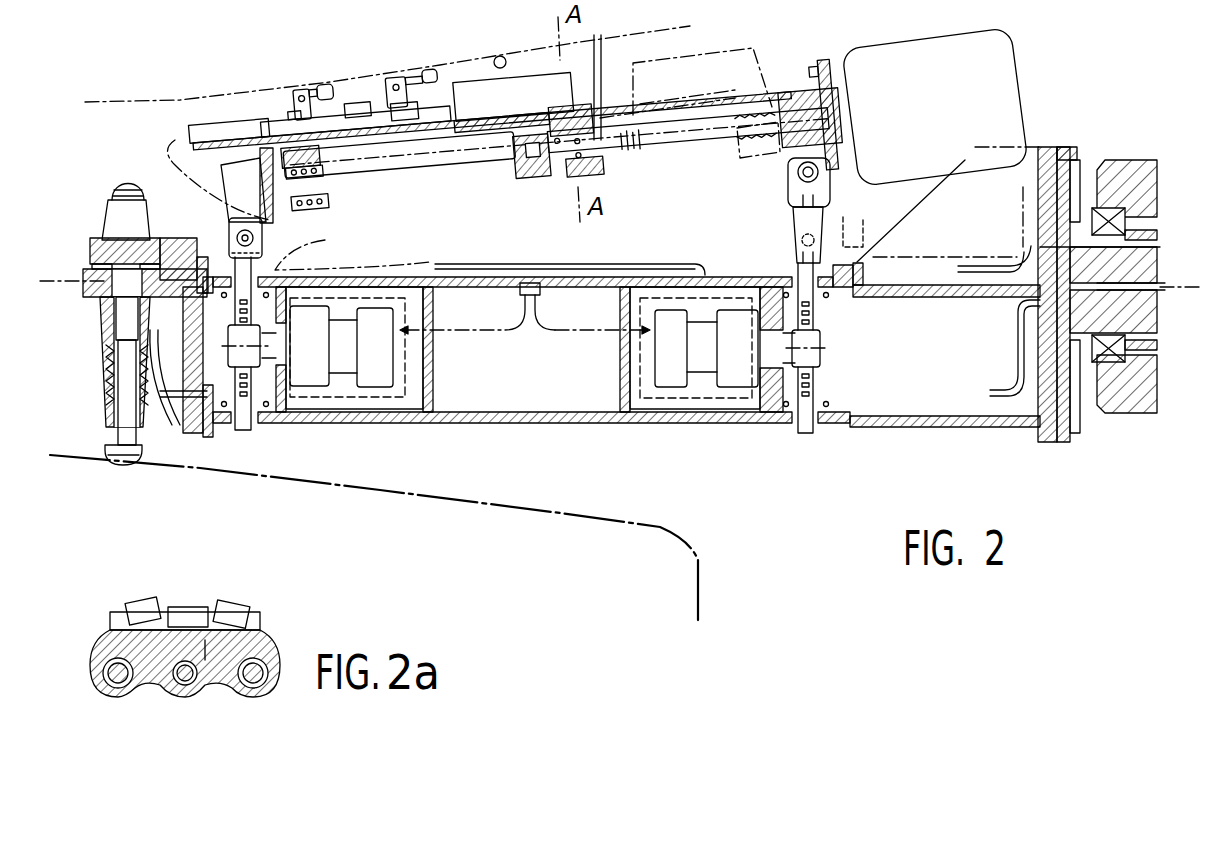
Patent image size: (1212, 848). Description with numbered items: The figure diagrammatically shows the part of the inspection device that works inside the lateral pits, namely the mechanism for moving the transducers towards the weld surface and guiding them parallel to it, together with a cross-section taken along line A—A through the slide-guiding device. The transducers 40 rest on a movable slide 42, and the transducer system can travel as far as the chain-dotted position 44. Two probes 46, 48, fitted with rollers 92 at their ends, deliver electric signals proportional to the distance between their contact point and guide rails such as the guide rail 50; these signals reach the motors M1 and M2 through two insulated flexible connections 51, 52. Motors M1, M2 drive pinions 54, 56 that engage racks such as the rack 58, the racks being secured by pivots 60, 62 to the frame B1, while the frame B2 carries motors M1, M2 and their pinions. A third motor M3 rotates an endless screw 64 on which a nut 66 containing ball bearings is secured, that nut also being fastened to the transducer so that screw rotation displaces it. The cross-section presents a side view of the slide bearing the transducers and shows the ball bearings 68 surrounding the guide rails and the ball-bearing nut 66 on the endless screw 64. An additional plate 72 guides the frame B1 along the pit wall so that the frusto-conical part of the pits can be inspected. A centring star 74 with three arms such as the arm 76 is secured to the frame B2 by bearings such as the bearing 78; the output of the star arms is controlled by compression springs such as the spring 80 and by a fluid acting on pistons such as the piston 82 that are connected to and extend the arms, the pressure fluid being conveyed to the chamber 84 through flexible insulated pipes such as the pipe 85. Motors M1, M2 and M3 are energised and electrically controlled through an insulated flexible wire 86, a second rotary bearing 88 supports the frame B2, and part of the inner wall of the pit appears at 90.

In FIG. 2, the transducers 40 is at (531, 139).
In FIG. 2A, the transducers 40 is at (150, 603).
In FIG. 2, the movable slide 42 is at (597, 60).
In FIG. 2A, the movable slide 42 is at (265, 650).
In FIG. 2, the chain-dotted position 44 is at (760, 55).
In FIG. 2, the probe 46 is at (307, 88).
In FIG. 2, the probe 48 is at (400, 82).
In FIG. 2, the guide rail 50 is at (395, 172).
In FIG. 2, the insulated flexible connection 51 is at (515, 268).
In FIG. 2, the insulated flexible connection 52 is at (445, 262).
In FIG. 2, the pinion 54 is at (253, 360).
In FIG. 2, the pinion 56 is at (822, 342).
In FIG. 2, the rack 58 is at (290, 275).
In FIG. 2, the pivot 60 is at (243, 237).
In FIG. 2, the pivot 62 is at (787, 170).
In FIG. 2, the endless screw 64 is at (637, 145).
In FIG. 2A, the endless screw 64 is at (180, 690).
In FIG. 2, the nut comprising ball bearings 66 is at (556, 175).
In FIG. 2A, the nut comprising ball bearings 66 is at (215, 690).
In FIG. 2A, the ball bearings 68 is at (120, 690).
In FIG. 2, the additional plate 72 is at (797, 228).
In FIG. 2, the centring star 74 is at (113, 190).
In FIG. 2, the star arm 76 is at (104, 430).
In FIG. 2, the bearing 78 is at (92, 258).
In FIG. 2, the spring 80 is at (110, 380).
In FIG. 2, the piston 82 is at (125, 338).
In FIG. 2, the chamber 84 is at (122, 316).
In FIG. 2, the flexible insulated pipe 85 is at (183, 428).
In FIG. 2, the insulated flexible wire 86 is at (1013, 255).
In FIG. 2, the second rotary bearing 88 is at (1112, 208).
In FIG. 2, the inner wall of the pit 90 is at (500, 55).
In FIG. 2, the roller 92 is at (437, 68).
In FIG. 2, the frame B1 is at (248, 168).
In FIG. 2, the frame B2 is at (668, 423).
In FIG. 2, the motor M1 is at (306, 354).
In FIG. 2, the motor M2 is at (736, 354).
In FIG. 2, the motor M3 is at (928, 115).